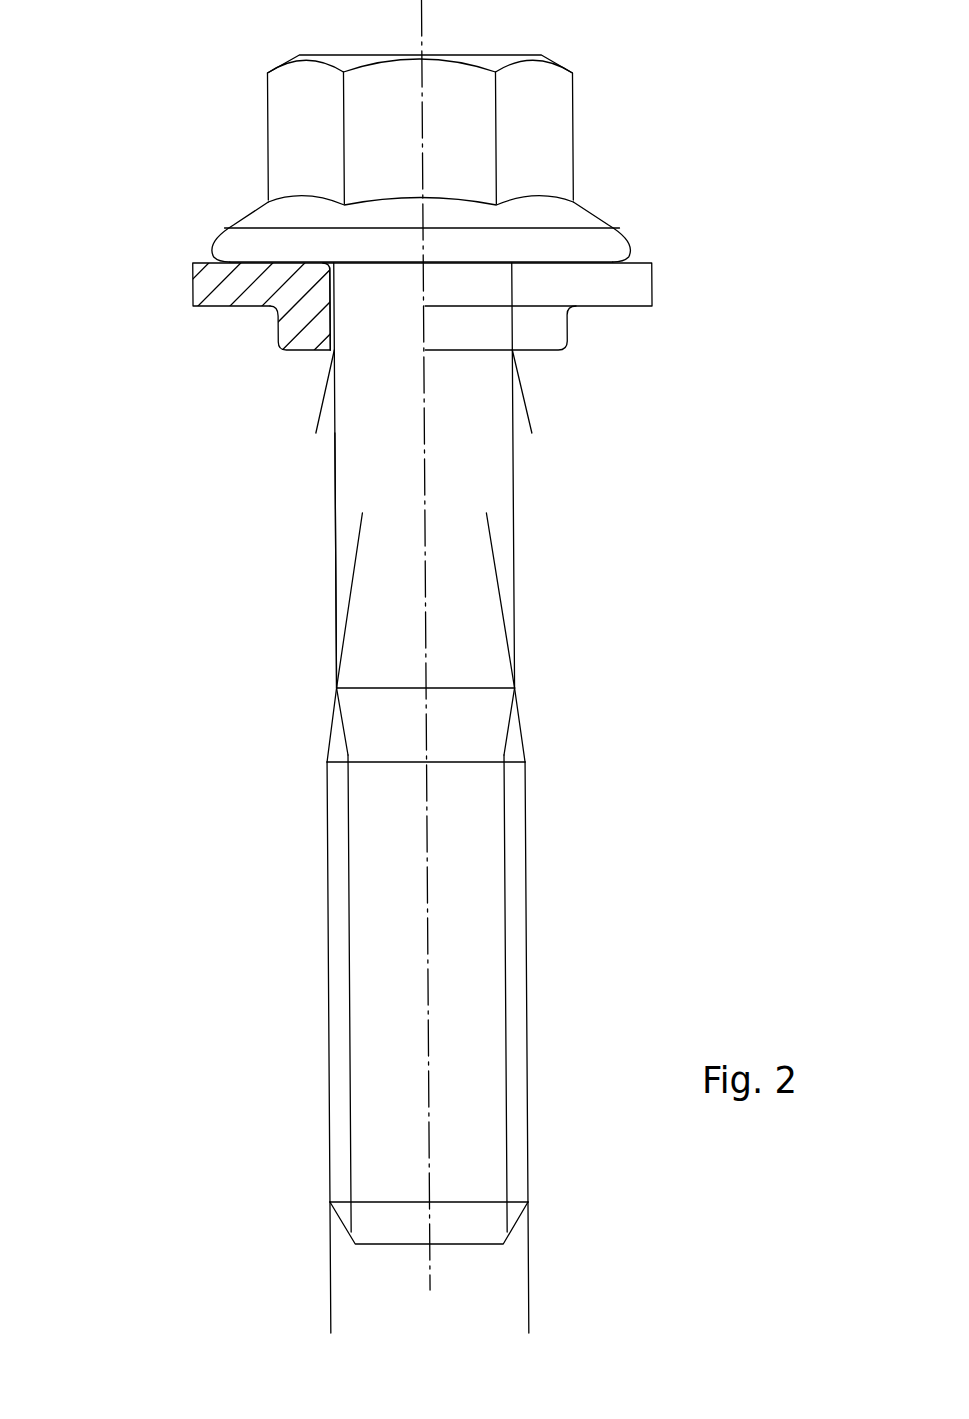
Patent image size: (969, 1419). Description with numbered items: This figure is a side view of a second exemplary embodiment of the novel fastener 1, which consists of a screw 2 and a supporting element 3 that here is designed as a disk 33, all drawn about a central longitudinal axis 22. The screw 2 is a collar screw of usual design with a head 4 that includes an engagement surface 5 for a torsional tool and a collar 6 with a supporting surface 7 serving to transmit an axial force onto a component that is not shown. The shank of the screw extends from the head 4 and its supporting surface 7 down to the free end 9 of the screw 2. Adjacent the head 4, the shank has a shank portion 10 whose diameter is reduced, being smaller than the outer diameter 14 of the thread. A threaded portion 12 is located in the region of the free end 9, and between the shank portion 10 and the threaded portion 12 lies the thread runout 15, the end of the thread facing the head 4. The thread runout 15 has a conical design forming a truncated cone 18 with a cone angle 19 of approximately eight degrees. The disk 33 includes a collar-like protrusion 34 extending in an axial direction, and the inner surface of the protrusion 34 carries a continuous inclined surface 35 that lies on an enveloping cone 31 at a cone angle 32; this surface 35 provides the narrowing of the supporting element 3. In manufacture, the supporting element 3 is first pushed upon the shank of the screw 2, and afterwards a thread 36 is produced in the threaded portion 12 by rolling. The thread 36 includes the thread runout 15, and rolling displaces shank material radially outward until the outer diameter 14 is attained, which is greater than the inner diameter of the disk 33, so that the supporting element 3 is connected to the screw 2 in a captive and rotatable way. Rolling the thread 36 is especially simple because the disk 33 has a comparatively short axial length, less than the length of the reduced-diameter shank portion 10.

The fastener 1 is at (623, 512).
The screw 2 is at (515, 487).
The supporting element 3 is at (652, 288).
The head 4 is at (573, 183).
The engagement surface 5 is at (540, 132).
The collar 6 is at (555, 247).
The supporting surface 7 is at (585, 262).
The free end 9 is at (313, 1230).
The shank portion 10 is at (347, 535).
The threaded portion 12 is at (526, 882).
The outer diameter 14 is at (528, 1310).
The thread runout 15 is at (513, 743).
The cone 18 is at (500, 607).
The cone angle 19 is at (358, 563).
The longitudinal axis 22 is at (430, 997).
The enveloping cone 31 is at (318, 392).
The cone angle 32 is at (320, 417).
The disk 33 is at (262, 285).
The collar-like protrusion 34 is at (307, 317).
The inclined surface 35 is at (320, 335).
The thread 36 is at (507, 940).